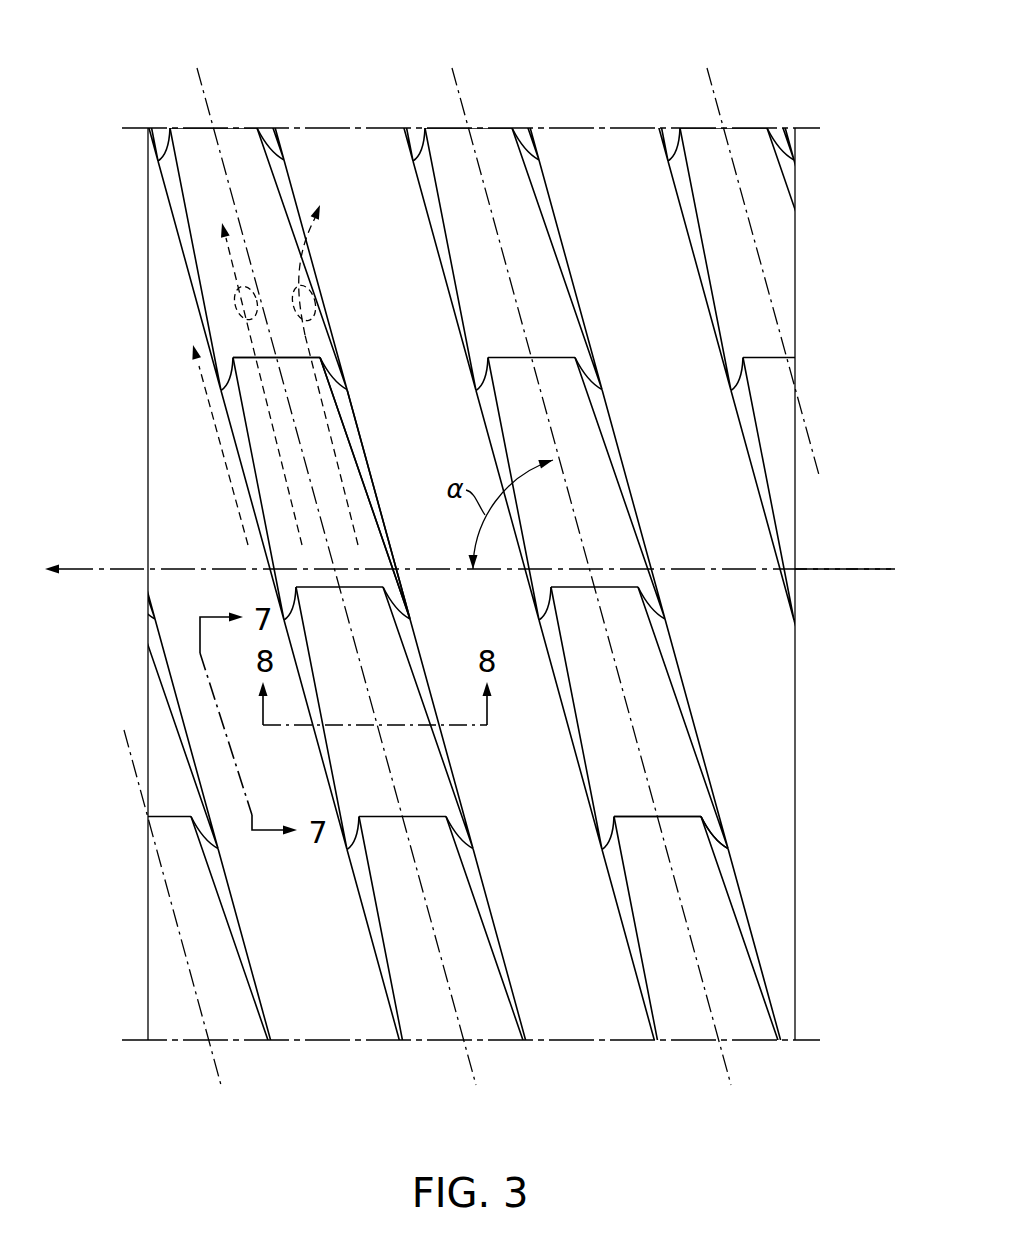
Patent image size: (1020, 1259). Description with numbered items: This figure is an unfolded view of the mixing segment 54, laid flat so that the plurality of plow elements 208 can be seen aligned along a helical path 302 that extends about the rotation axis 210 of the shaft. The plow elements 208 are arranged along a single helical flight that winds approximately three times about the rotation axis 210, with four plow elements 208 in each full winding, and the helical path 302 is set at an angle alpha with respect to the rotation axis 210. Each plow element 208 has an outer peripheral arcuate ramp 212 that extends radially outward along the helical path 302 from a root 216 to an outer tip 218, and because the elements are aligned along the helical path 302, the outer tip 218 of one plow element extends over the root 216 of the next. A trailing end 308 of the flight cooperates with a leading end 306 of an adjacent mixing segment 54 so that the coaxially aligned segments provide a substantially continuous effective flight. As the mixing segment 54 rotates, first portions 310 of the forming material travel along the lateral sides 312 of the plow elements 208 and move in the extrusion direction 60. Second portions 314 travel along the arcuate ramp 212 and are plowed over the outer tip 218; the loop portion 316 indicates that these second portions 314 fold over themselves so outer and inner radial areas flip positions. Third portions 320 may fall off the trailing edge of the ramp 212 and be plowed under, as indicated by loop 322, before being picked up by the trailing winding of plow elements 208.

The mixing segment 54 is at (603, 97).
The extrusion direction 60 is at (103, 566).
The plow elements 208 is at (580, 255).
The rotation axis 210 is at (836, 573).
The outer peripheral arcuate ramp 212 is at (337, 503).
The root 216 is at (720, 832).
The outer tip 218 is at (320, 357).
The helical path 302 is at (717, 110).
The leading end 306 is at (148, 816).
The trailing end 308 is at (797, 486).
The first portions 310 is at (233, 480).
The lateral sides 312 is at (358, 893).
The second portions 314 is at (227, 257).
The loop portion 316 is at (237, 302).
The third portions 320 is at (327, 417).
The loop 322 is at (315, 298).